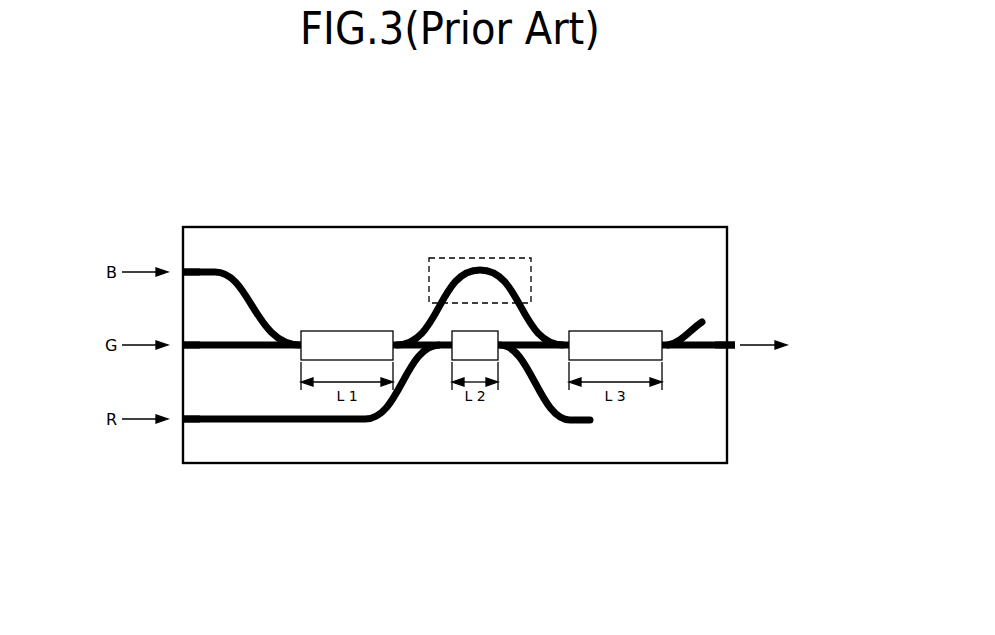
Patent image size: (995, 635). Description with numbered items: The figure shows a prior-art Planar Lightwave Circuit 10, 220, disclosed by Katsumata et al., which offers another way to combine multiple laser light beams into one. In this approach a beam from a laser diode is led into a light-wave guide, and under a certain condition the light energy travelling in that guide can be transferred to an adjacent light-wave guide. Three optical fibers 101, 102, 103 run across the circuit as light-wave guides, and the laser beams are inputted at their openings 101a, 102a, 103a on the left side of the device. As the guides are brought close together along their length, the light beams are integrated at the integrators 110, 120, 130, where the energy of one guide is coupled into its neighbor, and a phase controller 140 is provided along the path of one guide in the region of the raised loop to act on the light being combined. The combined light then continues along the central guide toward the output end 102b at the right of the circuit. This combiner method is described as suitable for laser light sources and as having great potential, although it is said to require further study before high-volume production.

The Planar Lightwave Circuit 10 is at (731, 173).
The optical fiber 101 is at (298, 437).
The opening 101a is at (183, 420).
The optical fiber 102 is at (241, 365).
The opening 102a is at (183, 347).
The output port of second optical waveguide 102b is at (733, 343).
The optical fiber 103 is at (226, 257).
The opening 103a is at (183, 273).
The integrator 110 is at (336, 318).
The integrator 120 is at (443, 376).
The integrator 130 is at (613, 318).
The phase controller 140 is at (489, 242).
The Planar Lightwave Circuit 220 is at (637, 450).